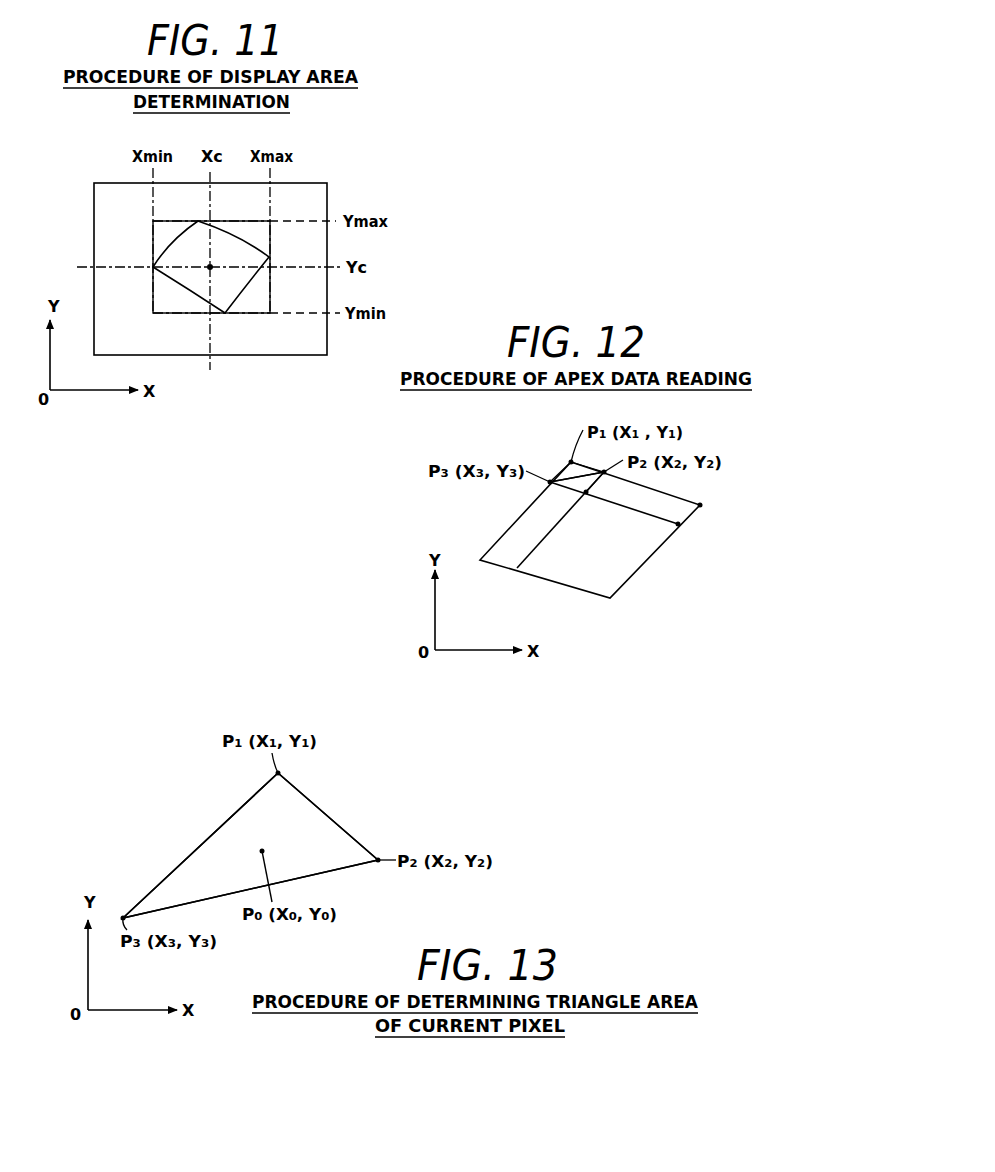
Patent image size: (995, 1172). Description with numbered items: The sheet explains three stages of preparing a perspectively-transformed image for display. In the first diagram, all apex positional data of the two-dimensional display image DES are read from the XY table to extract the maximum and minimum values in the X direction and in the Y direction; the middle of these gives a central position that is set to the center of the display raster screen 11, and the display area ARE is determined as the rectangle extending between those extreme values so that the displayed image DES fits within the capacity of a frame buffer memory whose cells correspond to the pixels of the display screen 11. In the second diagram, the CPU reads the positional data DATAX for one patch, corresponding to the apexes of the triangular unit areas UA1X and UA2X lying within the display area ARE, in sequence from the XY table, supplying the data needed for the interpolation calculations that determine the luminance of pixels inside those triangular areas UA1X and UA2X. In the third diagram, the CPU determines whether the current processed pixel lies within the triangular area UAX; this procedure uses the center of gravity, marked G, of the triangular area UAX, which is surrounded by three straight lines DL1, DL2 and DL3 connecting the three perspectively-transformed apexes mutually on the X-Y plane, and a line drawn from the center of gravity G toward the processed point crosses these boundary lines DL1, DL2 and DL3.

In FIG. 11, the display raster screen 11 is at (327, 197).
In FIG. 11, the two-dimensional display image DES is at (172, 241).
In FIG. 11, the display area ARE is at (153, 252).
In FIG. 12, the positional data DATAX is at (622, 565).
In FIG. 12, the triangular area UA1X is at (572, 470).
In FIG. 12, the triangular area UA2X is at (578, 484).
In FIG. 13, the triangular area UAX is at (282, 802).
In FIG. 13, the straight line DL1 is at (340, 827).
In FIG. 13, the straight line DL2 is at (327, 877).
In FIG. 13, the straight line DL3 is at (173, 867).
In FIG. 13, the center of gravity of triangle G is at (264, 863).